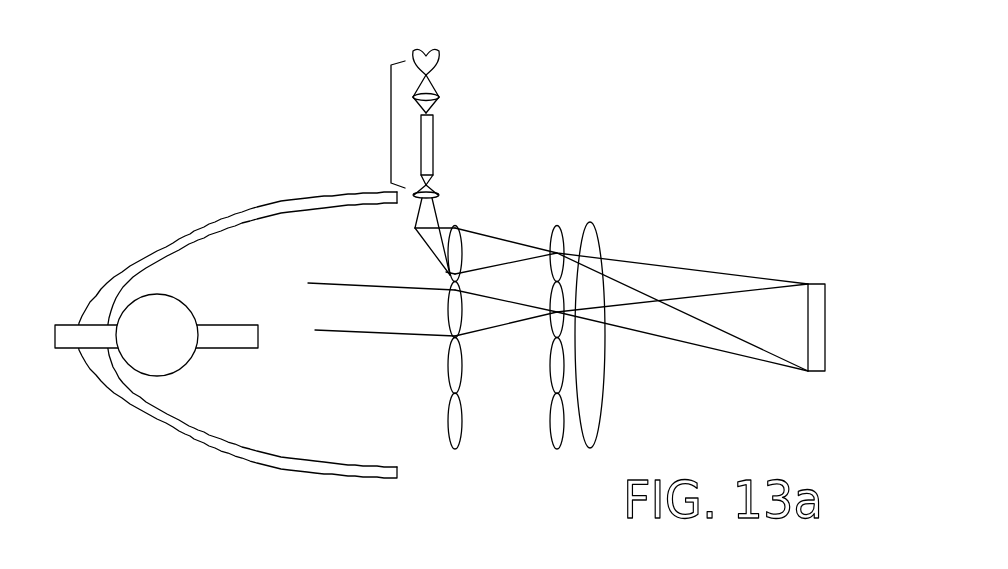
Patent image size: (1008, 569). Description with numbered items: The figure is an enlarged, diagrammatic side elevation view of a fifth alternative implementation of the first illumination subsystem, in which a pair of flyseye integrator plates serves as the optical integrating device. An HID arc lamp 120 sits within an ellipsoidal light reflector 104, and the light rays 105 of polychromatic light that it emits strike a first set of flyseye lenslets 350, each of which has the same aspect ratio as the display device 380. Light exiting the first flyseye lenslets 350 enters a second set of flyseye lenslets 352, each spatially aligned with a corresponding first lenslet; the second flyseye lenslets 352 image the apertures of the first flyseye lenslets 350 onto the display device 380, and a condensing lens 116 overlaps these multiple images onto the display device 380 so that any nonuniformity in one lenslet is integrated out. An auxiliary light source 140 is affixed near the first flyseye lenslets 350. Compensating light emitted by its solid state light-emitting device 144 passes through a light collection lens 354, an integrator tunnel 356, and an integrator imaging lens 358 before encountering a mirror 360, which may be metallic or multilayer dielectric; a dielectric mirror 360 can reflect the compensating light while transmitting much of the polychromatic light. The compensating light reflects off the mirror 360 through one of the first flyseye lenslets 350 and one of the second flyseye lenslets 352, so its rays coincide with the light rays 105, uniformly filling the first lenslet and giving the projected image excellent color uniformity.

The ellipsoidal light reflector 104 is at (238, 453).
The light rays 105 is at (350, 333).
The condensing lens 116 is at (588, 236).
The HID arc lamp 120 is at (157, 308).
The auxiliary light source 140 is at (388, 117).
The solid state light-emitting device 144 is at (428, 57).
The first flyseye lenslets 350 is at (457, 310).
The second flyseye lenslets 352 is at (557, 448).
The light collection lens 354 is at (438, 97).
The integrator tunnel 356 is at (434, 137).
The integrator imaging lens 358 is at (438, 196).
The mirror 360 is at (418, 249).
The display device 380 is at (826, 318).